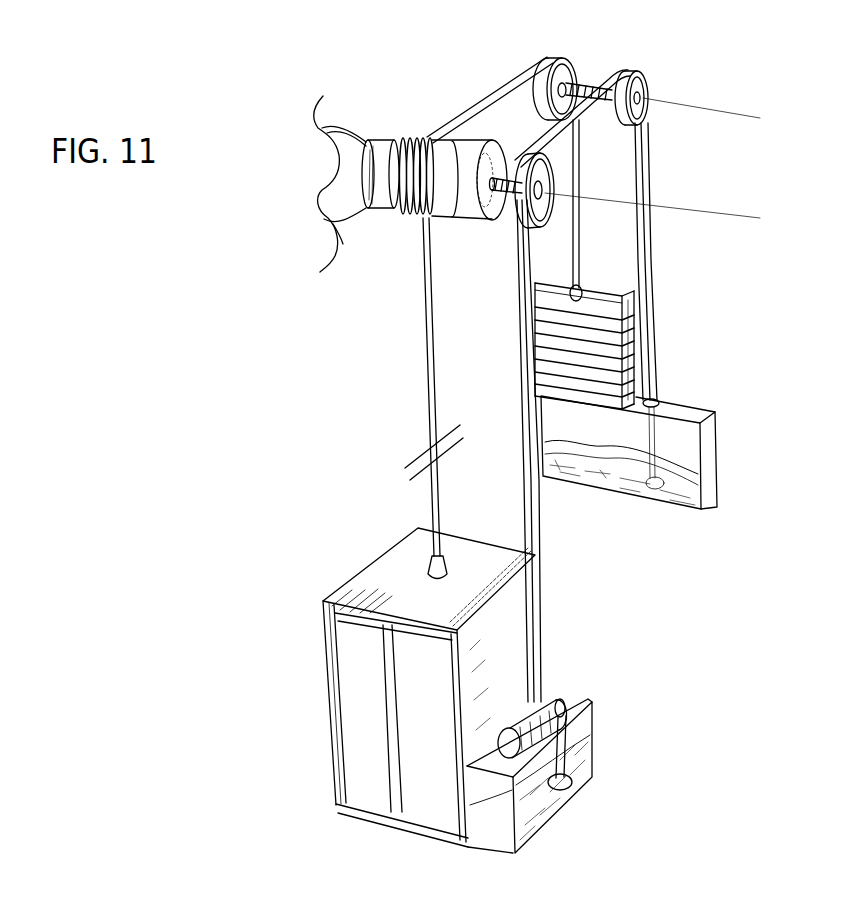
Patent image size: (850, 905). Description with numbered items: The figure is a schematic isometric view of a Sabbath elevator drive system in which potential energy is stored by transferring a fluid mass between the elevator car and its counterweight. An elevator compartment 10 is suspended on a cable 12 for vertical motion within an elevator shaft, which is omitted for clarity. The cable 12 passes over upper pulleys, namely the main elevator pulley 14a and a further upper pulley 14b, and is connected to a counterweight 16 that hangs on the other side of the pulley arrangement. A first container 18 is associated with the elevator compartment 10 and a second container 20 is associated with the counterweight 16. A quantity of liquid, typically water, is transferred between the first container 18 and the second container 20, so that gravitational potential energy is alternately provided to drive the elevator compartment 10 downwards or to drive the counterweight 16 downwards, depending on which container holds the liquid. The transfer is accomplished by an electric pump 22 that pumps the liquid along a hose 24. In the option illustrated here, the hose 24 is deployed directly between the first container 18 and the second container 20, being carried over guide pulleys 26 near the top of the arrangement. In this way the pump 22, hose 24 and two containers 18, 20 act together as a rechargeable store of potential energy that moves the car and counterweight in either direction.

The elevator compartment 10 is at (328, 653).
The cable 12 is at (430, 393).
The main elevator pulley 14a is at (412, 150).
The upper pulley 14b is at (562, 67).
The counterweight 16 is at (632, 328).
The first container 18 is at (570, 763).
The second container 20 is at (702, 448).
The electric pump 22 is at (552, 712).
The hose 24 is at (533, 522).
The guide pulley 26 is at (641, 98).